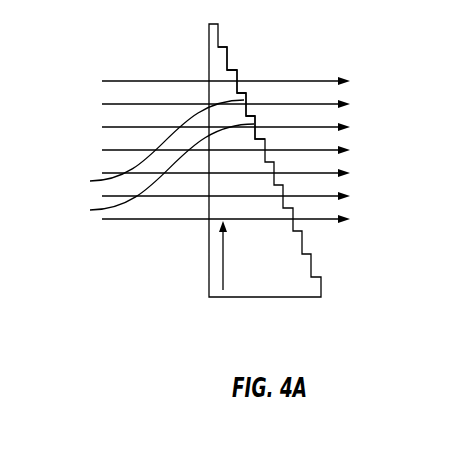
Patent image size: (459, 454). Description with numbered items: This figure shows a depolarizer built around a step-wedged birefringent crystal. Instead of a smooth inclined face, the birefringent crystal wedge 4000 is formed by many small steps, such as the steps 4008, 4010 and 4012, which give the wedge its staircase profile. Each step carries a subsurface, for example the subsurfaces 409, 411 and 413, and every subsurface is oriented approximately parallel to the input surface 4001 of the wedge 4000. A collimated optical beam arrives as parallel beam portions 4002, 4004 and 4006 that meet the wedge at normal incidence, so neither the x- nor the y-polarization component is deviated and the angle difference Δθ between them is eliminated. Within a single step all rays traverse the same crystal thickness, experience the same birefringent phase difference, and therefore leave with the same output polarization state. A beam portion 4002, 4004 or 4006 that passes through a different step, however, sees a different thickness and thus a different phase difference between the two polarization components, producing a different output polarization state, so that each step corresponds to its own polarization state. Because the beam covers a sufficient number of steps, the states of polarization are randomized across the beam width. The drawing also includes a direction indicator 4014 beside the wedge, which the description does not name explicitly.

The birefringent crystal wedge 4000 is at (209, 46).
The subsurface 409 is at (209, 71).
The collimated beam portion 4002 is at (118, 80).
The collimated beam portion 4004 is at (118, 103).
The collimated beam portion 4006 is at (118, 126).
The step 4008 is at (238, 72).
The step 4010 is at (248, 108).
The step 4012 is at (257, 130).
The subsurface 411 is at (147, 146).
The subsurface 413 is at (152, 173).
The input surface 4001 is at (205, 217).
The c-hat axis arrow 4014 is at (222, 282).